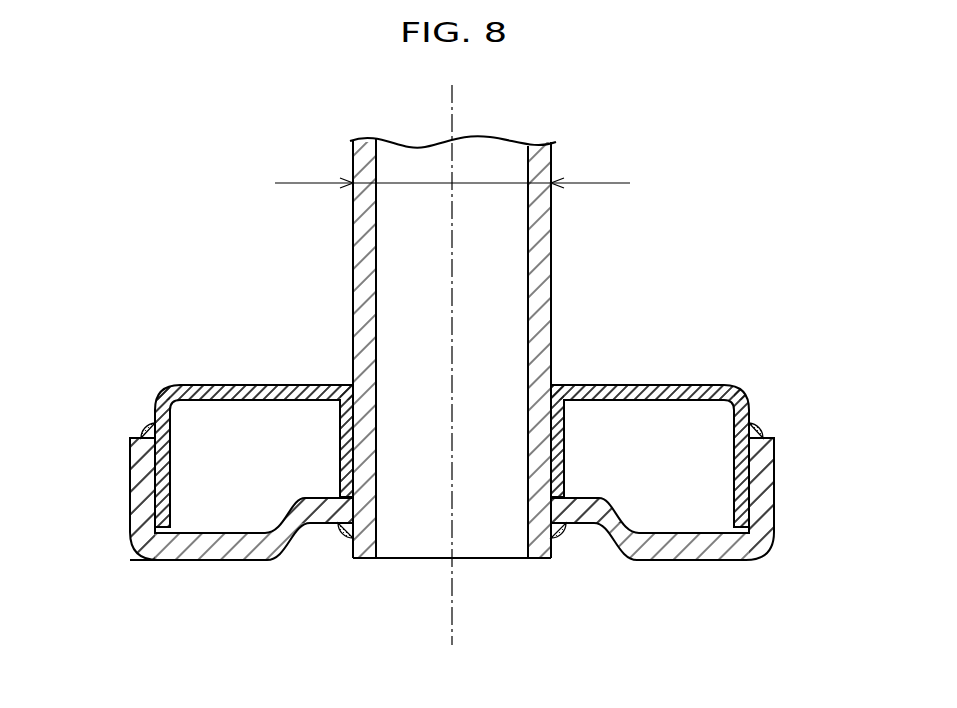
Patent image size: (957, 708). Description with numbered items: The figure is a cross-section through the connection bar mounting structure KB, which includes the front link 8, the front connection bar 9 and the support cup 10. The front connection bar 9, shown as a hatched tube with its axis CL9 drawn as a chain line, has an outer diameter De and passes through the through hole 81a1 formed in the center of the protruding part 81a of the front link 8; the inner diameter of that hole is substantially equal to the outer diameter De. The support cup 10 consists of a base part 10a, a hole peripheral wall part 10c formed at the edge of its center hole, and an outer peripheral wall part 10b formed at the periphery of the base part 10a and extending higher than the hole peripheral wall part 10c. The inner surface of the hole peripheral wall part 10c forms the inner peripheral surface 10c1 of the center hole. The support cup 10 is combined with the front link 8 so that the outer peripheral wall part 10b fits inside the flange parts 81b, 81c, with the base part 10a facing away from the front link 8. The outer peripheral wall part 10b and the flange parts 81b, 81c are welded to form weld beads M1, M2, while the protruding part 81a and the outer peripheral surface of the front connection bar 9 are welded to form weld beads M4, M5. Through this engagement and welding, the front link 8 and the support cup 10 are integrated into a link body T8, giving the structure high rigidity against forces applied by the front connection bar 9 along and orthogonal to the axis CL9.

The front link 8 is at (451, 548).
The front connection bar 9 is at (553, 248).
The support cup 10 is at (452, 464).
The base part 10a is at (607, 383).
The outer peripheral wall part 10b is at (175, 432).
The hole peripheral wall part 10c is at (340, 470).
The inner peripheral surface 10c1 is at (354, 452).
The protruding part 81a is at (578, 526).
The through hole 81a1 is at (551, 512).
The flange part 81b is at (130, 480).
The flange part 81c is at (777, 480).
The axis CL9 is at (452, 107).
The outer diameter De is at (452, 168).
The connection bar mounting structure KB is at (317, 357).
The link body T8 is at (198, 343).
The weld bead M1 is at (146, 420).
The weld bead M2 is at (758, 420).
The weld bead M4 is at (347, 540).
The weld bead M5 is at (566, 532).